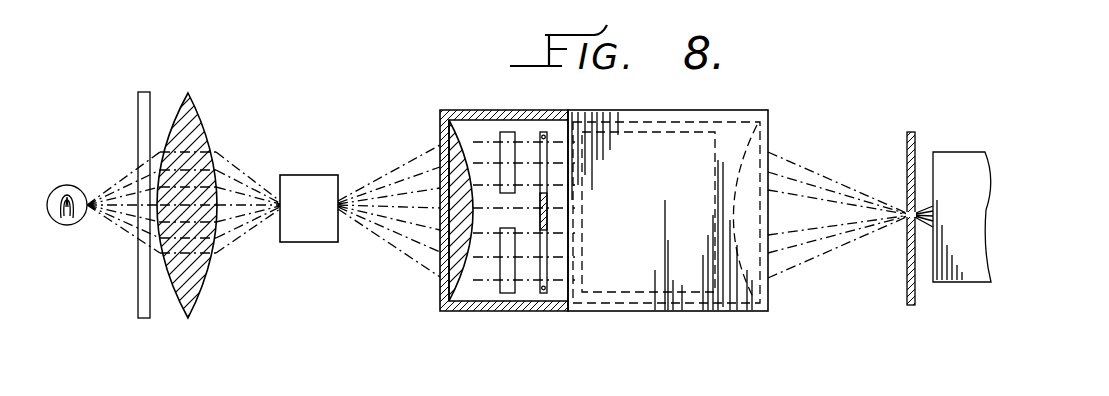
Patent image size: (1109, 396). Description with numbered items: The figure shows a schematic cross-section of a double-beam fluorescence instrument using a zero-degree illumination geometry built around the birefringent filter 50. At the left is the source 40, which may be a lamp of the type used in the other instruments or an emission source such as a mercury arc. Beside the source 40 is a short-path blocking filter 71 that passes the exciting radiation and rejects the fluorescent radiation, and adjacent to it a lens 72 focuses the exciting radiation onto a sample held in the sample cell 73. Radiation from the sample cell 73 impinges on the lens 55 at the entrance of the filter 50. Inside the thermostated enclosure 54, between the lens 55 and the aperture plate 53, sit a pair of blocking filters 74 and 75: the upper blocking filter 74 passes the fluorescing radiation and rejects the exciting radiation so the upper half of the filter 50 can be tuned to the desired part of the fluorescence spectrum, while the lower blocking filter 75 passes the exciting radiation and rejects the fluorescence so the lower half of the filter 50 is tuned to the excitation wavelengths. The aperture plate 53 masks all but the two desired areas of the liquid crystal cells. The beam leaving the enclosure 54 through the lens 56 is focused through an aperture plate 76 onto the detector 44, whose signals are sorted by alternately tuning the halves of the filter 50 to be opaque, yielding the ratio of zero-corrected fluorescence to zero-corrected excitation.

The source 40 is at (69, 186).
The blocking filter 71 is at (138, 100).
The lens 72 is at (197, 127).
The sample cell 73 is at (324, 220).
The birefringent filter 50 is at (744, 111).
The lens 55 is at (440, 136).
The blocking filter 74 is at (509, 137).
The blocking filter 75 is at (506, 290).
The aperture plate 53 is at (541, 203).
The thermostated enclosure 54 is at (614, 118).
The lens 56 is at (741, 166).
The aperture plate 76 is at (907, 141).
The detector 44 is at (963, 160).